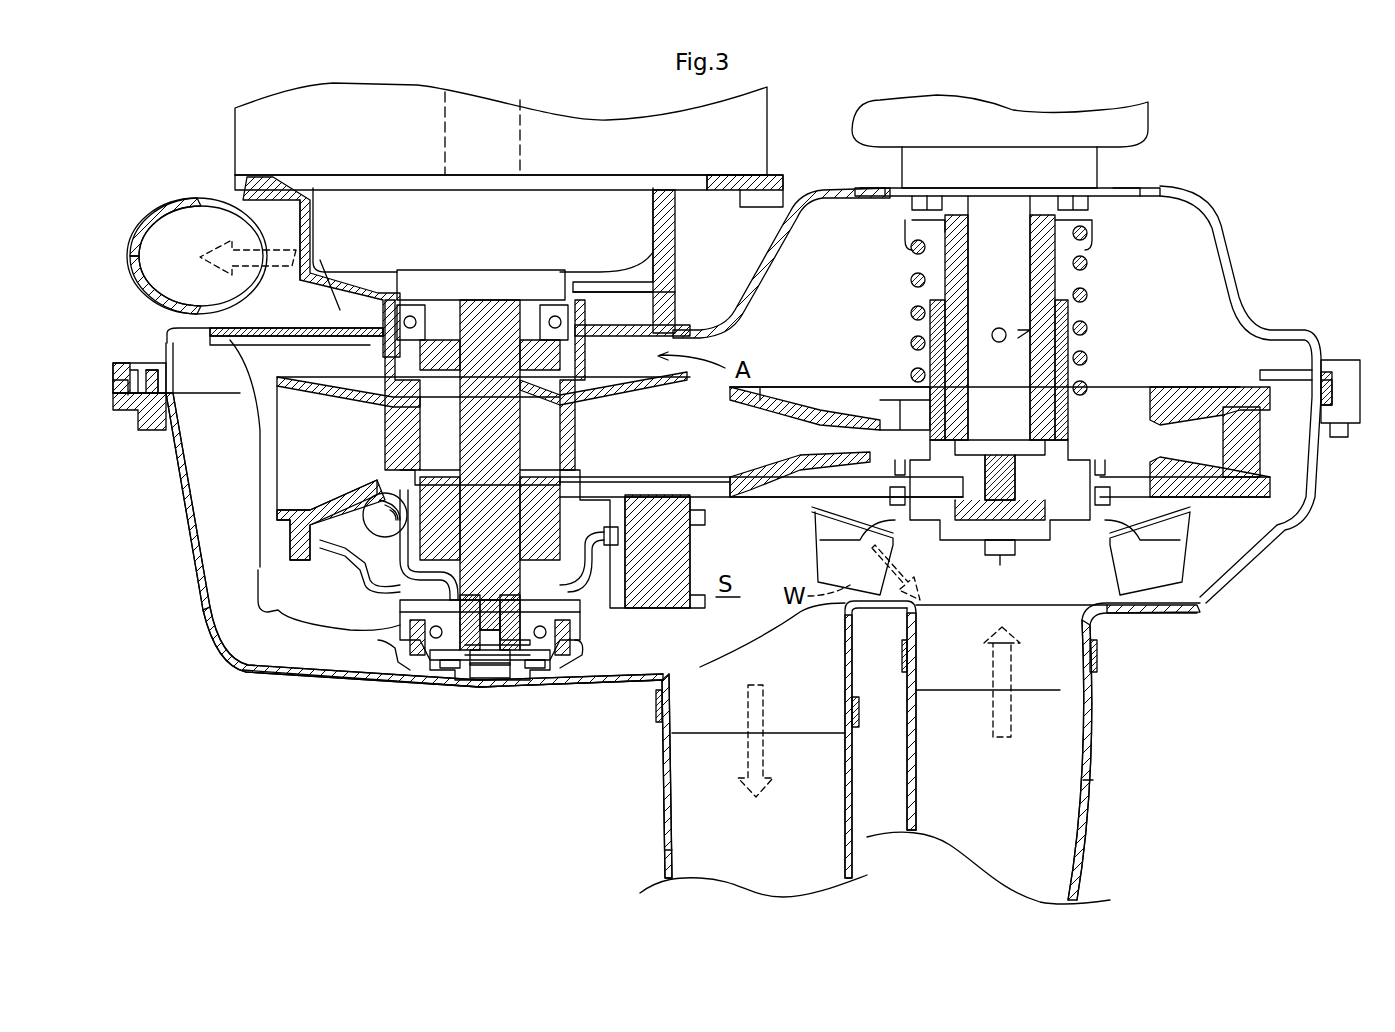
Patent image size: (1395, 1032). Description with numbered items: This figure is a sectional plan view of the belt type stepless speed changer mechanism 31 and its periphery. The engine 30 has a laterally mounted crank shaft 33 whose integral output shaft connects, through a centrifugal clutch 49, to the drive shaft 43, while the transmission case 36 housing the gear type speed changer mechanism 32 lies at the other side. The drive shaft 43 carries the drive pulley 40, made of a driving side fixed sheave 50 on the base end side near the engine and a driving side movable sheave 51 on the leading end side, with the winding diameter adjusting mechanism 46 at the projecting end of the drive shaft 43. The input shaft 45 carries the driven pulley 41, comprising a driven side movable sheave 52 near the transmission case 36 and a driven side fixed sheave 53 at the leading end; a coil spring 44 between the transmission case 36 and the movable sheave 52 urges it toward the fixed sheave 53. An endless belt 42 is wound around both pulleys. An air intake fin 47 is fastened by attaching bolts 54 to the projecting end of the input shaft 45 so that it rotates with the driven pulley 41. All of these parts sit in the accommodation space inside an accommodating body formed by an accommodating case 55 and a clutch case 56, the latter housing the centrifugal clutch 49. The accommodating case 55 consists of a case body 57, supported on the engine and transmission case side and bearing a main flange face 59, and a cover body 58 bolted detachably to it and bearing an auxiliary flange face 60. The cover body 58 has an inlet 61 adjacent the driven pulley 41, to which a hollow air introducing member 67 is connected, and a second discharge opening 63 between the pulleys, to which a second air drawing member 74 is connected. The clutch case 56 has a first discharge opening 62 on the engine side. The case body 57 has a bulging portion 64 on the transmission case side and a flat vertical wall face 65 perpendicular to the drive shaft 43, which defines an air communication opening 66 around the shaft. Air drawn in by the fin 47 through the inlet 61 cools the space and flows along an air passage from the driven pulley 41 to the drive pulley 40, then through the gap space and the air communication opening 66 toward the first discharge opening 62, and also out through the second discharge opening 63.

The engine 30 is at (235, 130).
The belt type stepless speed changer mechanism 31 is at (571, 683).
The gear type speed changer mechanism 32 is at (1143, 118).
The crank shaft 33 is at (445, 150).
The transmission case 36 is at (1007, 192).
The drive pulley 40 is at (274, 576).
The driven pulley 41 is at (1240, 505).
The endless belt 42 is at (1262, 450).
The drive shaft 43 is at (495, 448).
The coil spring 44 is at (1088, 260).
The input shaft 45 is at (985, 252).
The winding diameter adjusting mechanism 46 is at (373, 603).
The air intake fin 47 is at (1178, 560).
The centrifugal clutch 49 is at (640, 246).
The driving side fixed sheave 50 is at (340, 385).
The driving side movable sheave 51 is at (330, 500).
The driven side movable sheave 52 is at (790, 400).
The driven side fixed sheave 53 is at (775, 500).
The attaching bolts 54 is at (935, 497).
The accommodating case 55 is at (228, 684).
The clutch case 56 is at (240, 190).
The case body 57 is at (167, 338).
The cover body 58 is at (192, 552).
The main flange face 59 is at (116, 383).
The auxiliary flange face 60 is at (116, 410).
The inlet 61 is at (1062, 686).
The first discharge opening 62 is at (160, 257).
The second discharge opening 63 is at (714, 730).
The bulging portion 64 is at (1228, 278).
The vertical wall face 65 is at (670, 330).
The air communication opening 66 is at (340, 311).
The air introducing member 67 is at (1092, 825).
The second air drawing member 74 is at (660, 862).